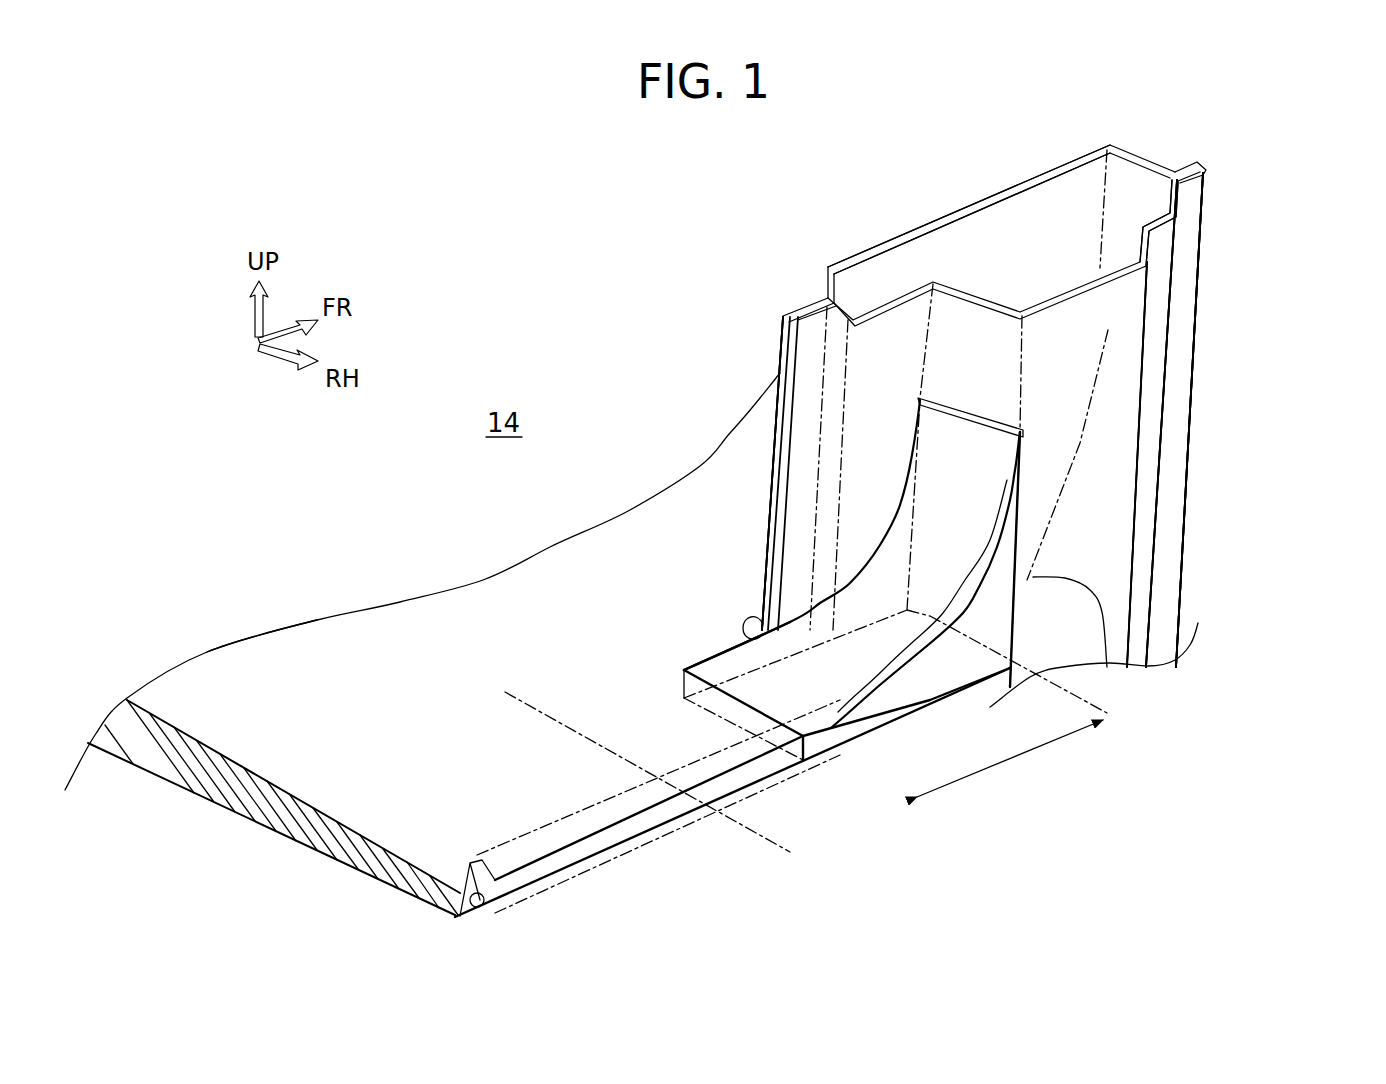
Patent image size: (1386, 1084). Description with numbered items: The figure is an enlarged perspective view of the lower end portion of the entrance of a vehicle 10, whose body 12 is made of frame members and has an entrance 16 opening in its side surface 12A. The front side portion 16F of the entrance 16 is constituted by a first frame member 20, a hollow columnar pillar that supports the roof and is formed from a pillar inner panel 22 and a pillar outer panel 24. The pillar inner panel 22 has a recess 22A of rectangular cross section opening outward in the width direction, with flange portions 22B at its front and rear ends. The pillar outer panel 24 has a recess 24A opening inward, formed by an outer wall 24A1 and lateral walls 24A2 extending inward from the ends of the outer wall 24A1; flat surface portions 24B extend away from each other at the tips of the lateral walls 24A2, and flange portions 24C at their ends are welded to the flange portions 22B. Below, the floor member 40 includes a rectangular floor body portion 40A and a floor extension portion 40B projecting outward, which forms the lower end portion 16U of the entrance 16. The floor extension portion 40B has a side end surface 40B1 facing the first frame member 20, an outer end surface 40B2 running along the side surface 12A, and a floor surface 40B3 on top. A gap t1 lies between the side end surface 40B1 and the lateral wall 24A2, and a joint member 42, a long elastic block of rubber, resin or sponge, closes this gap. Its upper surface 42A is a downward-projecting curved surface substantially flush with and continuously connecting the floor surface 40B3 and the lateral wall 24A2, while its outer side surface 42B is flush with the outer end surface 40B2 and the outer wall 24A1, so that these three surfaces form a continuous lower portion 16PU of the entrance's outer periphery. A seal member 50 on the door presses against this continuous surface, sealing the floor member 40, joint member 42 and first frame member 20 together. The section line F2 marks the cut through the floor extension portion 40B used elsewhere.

The vehicle 10 is at (1189, 420).
The body 12 is at (1201, 586).
The side surface of the body 12A is at (1177, 520).
The entrance 16 is at (772, 473).
The side portion of the entrance 16F is at (784, 425).
The lower end portion of the entrance 16U is at (420, 847).
The lower portion of the outer peripheral portion 16PU is at (1090, 463).
The first frame member 20 is at (957, 160).
The pillar inner panel 22 is at (1040, 165).
The recess 22A is at (906, 226).
The flange portions 22B is at (800, 303).
The pillar outer panel 24 is at (1211, 203).
The recess 24A is at (1154, 296).
The outer wall 24A1 is at (1108, 343).
The lateral walls 24A2 is at (948, 330).
The flat surface portions 24B is at (900, 323).
The flange portions 24C is at (815, 355).
The floor member 40 is at (120, 795).
The floor body portion 40A is at (686, 513).
The floor extension portion 40B is at (258, 830).
The side end surface 40B1 is at (752, 700).
The outer end surface 40B2 is at (540, 863).
The floor surface 40B3 is at (507, 820).
The joint member 42 is at (956, 398).
The upper surface of the joint member 42A is at (892, 545).
The outer side surface of the joint member 42B is at (937, 680).
The seal member 50 is at (1107, 670).
The section line F2 is at (502, 696).
The gap t1 is at (1003, 766).